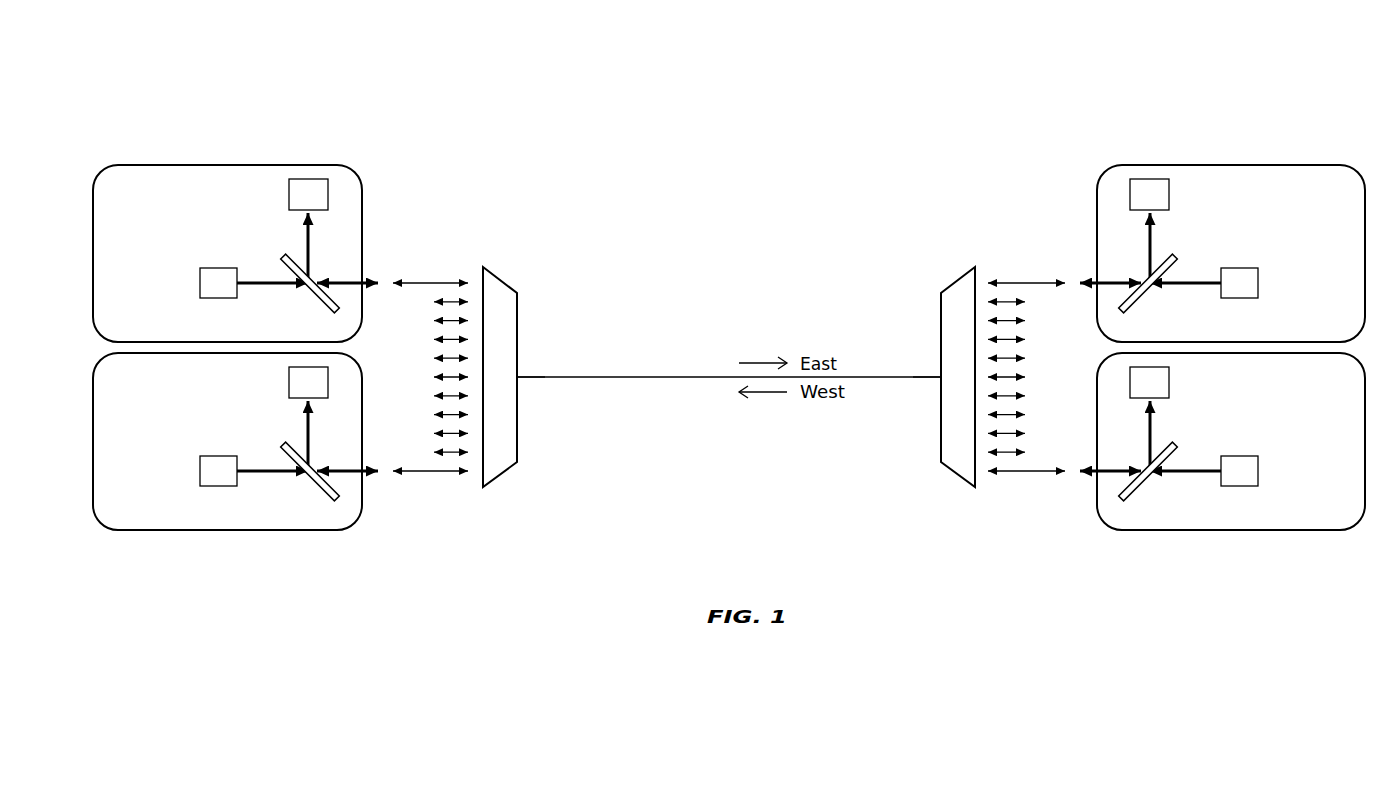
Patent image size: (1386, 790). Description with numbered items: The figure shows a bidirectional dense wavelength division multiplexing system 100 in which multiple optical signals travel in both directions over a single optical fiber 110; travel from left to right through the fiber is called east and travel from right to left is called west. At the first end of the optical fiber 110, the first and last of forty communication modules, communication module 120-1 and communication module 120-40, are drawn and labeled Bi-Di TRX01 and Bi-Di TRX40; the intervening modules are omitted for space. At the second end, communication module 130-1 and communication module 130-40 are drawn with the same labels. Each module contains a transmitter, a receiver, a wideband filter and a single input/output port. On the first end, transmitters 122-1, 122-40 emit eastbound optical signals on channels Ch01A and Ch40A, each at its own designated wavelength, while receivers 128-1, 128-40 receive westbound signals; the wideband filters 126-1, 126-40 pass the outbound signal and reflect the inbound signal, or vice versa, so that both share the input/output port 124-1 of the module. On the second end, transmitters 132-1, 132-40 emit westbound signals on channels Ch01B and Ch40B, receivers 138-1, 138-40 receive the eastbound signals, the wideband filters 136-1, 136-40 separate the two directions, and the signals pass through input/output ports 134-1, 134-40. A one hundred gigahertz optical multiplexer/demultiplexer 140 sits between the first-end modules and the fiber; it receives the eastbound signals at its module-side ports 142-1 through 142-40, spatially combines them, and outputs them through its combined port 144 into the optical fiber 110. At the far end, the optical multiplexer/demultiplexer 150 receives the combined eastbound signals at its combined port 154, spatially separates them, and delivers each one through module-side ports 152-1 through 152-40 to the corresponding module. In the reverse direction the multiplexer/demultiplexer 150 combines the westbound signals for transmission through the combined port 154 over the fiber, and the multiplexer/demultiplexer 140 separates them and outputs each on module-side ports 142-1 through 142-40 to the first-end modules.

The bidirectional dense wavelength division multiplexing system 100 is at (1294, 70).
The optical fiber 110 is at (613, 377).
The communication module 120-1 is at (128, 165).
The communication module 120-40 is at (128, 530).
The transmitter 122-1 is at (218, 299).
The transmitter 122-40 is at (218, 487).
The input/output port 124-1 is at (365, 279).
The wideband filter 126-1 is at (315, 301).
The wideband filter 126-40 is at (315, 489).
The receiver 128-1 is at (295, 211).
The receiver 128-40 is at (295, 399).
The communication module 130-1 is at (1330, 165).
The communication module 130-40 is at (1330, 530).
The transmitter 132-1 is at (1238, 299).
The transmitter 132-40 is at (1238, 487).
The input/output port 134-1 is at (1094, 279).
The input/output port 134-40 is at (1094, 476).
The wideband filter 136-1 is at (1143, 301).
The wideband filter 136-40 is at (1143, 489).
The receiver 138-1 is at (1163, 211).
The receiver 138-40 is at (1163, 399).
The optical multiplexer/demultiplexer 140 is at (505, 283).
The module-side port 142-1 is at (413, 287).
The module-side port 142-40 is at (413, 468).
The combined port 144 is at (520, 377).
The optical multiplexer/demultiplexer 150 is at (957, 281).
The module-side port 152-1 is at (1042, 287).
The module-side port 152-40 is at (1043, 468).
The combined port 154 is at (939, 377).